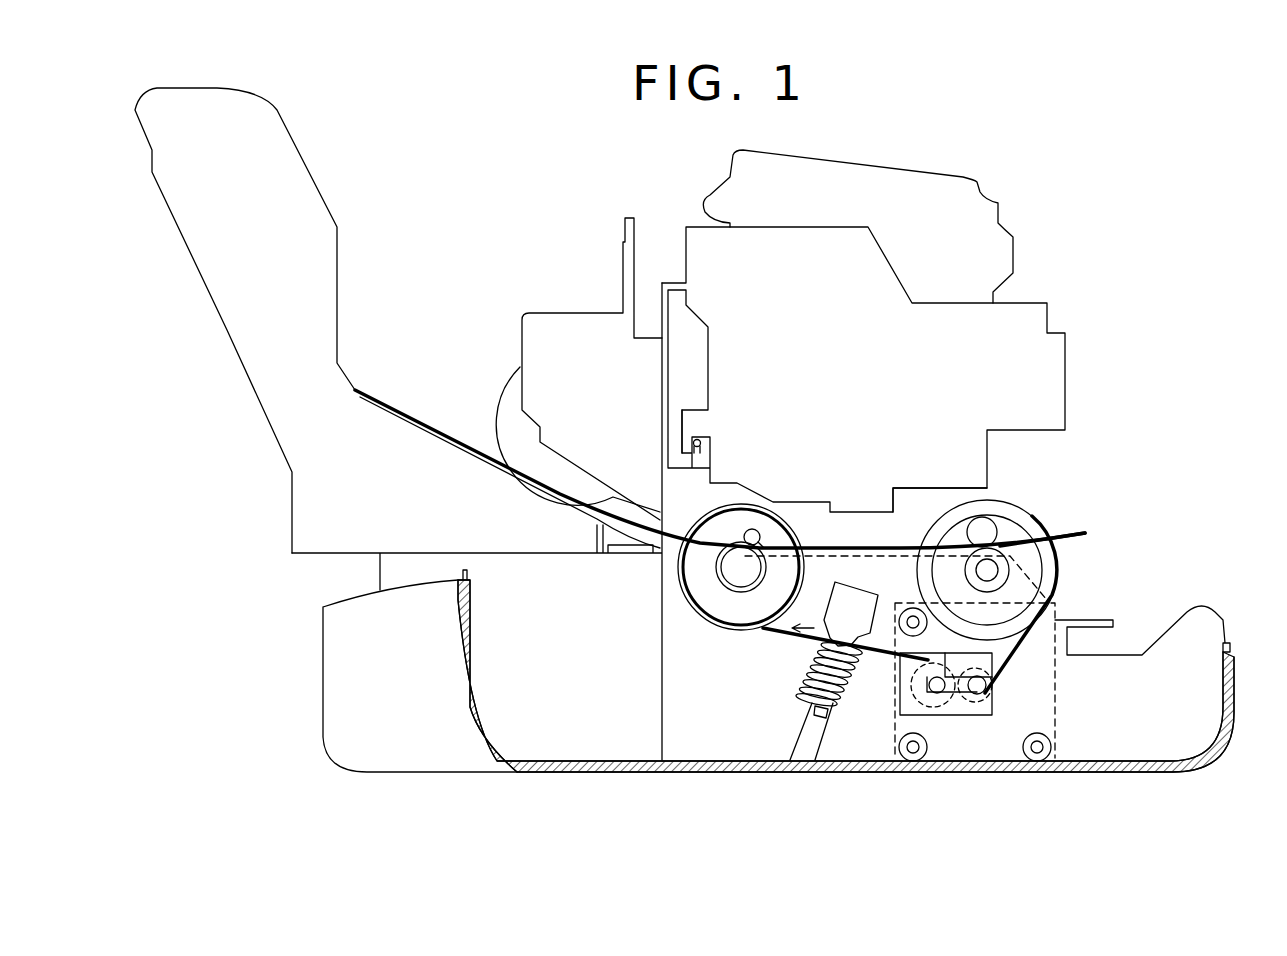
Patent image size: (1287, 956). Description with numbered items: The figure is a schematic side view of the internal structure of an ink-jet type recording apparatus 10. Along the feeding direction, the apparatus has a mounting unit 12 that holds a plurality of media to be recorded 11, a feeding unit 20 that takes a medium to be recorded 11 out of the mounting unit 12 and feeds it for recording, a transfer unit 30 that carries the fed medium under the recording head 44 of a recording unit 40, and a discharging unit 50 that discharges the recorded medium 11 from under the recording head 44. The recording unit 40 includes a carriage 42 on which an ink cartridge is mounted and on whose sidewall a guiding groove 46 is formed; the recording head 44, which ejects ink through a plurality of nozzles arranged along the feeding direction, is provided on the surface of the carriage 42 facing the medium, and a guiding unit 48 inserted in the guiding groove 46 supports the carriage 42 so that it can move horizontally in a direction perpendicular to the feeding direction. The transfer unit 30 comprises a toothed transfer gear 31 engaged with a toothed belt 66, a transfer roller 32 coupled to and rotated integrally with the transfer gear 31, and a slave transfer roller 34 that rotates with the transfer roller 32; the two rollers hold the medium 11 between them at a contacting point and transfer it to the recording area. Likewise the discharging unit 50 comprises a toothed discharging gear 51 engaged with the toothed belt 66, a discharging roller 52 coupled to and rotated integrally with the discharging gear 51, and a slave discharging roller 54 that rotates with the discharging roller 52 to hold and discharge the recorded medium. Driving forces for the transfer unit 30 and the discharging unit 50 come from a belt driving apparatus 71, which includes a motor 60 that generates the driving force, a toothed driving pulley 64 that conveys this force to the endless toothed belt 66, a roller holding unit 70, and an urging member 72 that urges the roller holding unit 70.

The ink-jet type recording apparatus 10 is at (1167, 186).
The medium to be recorded 11 is at (417, 428).
The mounting unit 12 is at (326, 147).
The feeding unit 20 is at (512, 402).
The transfer unit 30 is at (738, 608).
The transfer gear 31 is at (695, 610).
The transfer roller 32 is at (728, 607).
The slave transfer roller 34 is at (764, 601).
The recording unit 40 is at (960, 345).
The carriage 42 is at (1047, 322).
The recording head 44 is at (873, 540).
The guiding groove 46 is at (682, 425).
The guiding unit 48 is at (695, 450).
The discharging unit 50 is at (970, 593).
The discharging gear 51 is at (1010, 570).
The discharging roller 52 is at (1062, 548).
The slave discharging roller 54 is at (997, 527).
The motor 60 is at (1040, 643).
The toothed driving pulley 64 is at (977, 694).
The toothed belt 66 is at (803, 643).
The roller holding unit 70 is at (893, 670).
The belt driving apparatus 71 is at (819, 725).
The urging member 72 is at (840, 660).